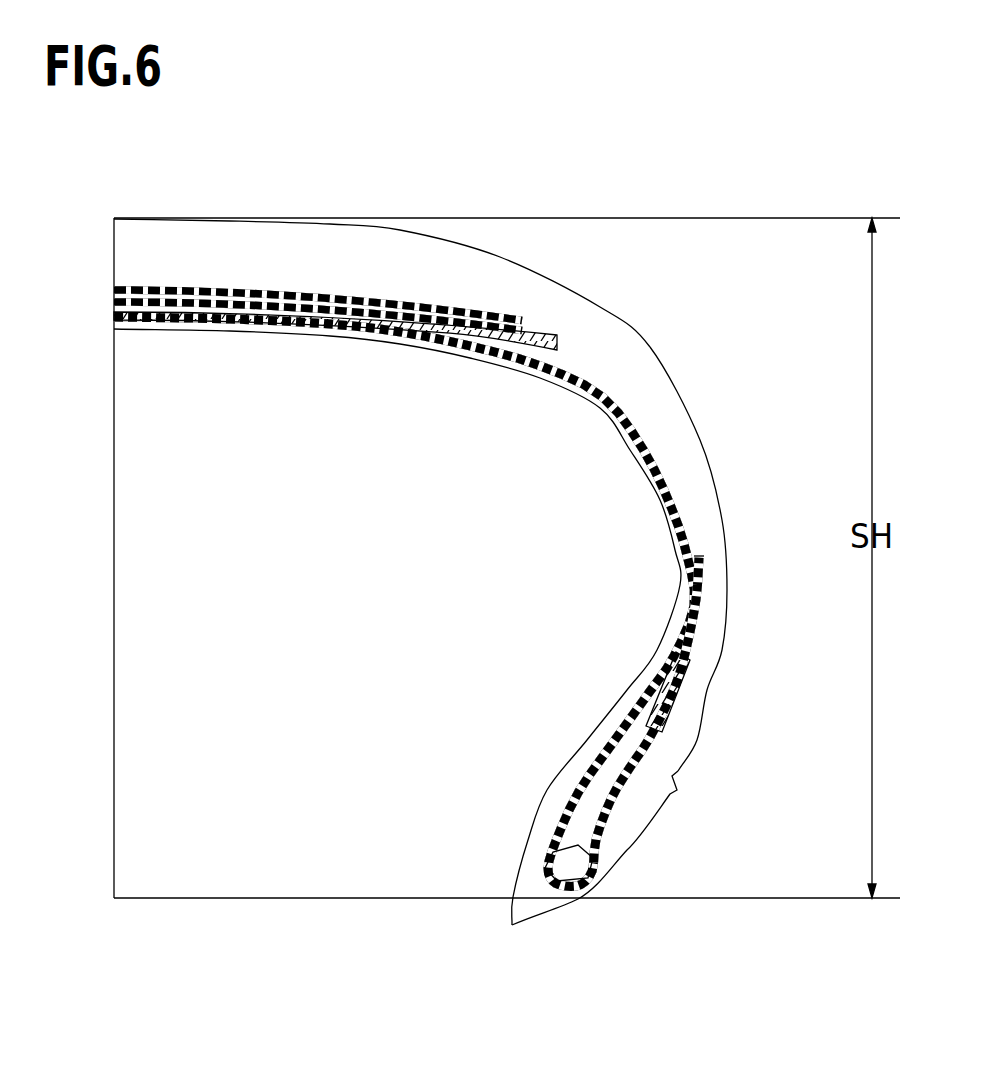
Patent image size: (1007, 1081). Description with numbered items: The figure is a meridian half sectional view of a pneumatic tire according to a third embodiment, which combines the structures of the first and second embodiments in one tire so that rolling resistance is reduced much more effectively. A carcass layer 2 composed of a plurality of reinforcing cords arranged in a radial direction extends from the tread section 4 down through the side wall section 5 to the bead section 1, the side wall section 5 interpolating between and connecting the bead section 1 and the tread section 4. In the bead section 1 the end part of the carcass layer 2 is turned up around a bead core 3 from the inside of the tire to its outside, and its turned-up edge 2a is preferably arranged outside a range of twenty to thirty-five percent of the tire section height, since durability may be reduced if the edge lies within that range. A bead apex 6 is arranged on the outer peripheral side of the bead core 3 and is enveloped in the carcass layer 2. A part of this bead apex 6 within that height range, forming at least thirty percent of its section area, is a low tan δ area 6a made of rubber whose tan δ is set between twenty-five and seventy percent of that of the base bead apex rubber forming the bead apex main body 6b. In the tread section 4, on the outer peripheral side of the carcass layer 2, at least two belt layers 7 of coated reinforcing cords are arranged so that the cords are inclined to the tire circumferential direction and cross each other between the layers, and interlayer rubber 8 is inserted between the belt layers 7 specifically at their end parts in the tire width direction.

The bead section 1 is at (629, 853).
The carcass layer 2 is at (660, 450).
The turned-up edge 2a is at (703, 555).
The bead core 3 is at (554, 868).
The tread section 4 is at (428, 229).
The side wall section 5 is at (726, 524).
The bead apex 6 is at (571, 781).
The low tan δ area 6a is at (660, 697).
The bead apex main body 6b is at (570, 823).
The belt layer 7 is at (262, 304).
The interlayer rubber 8 is at (550, 332).